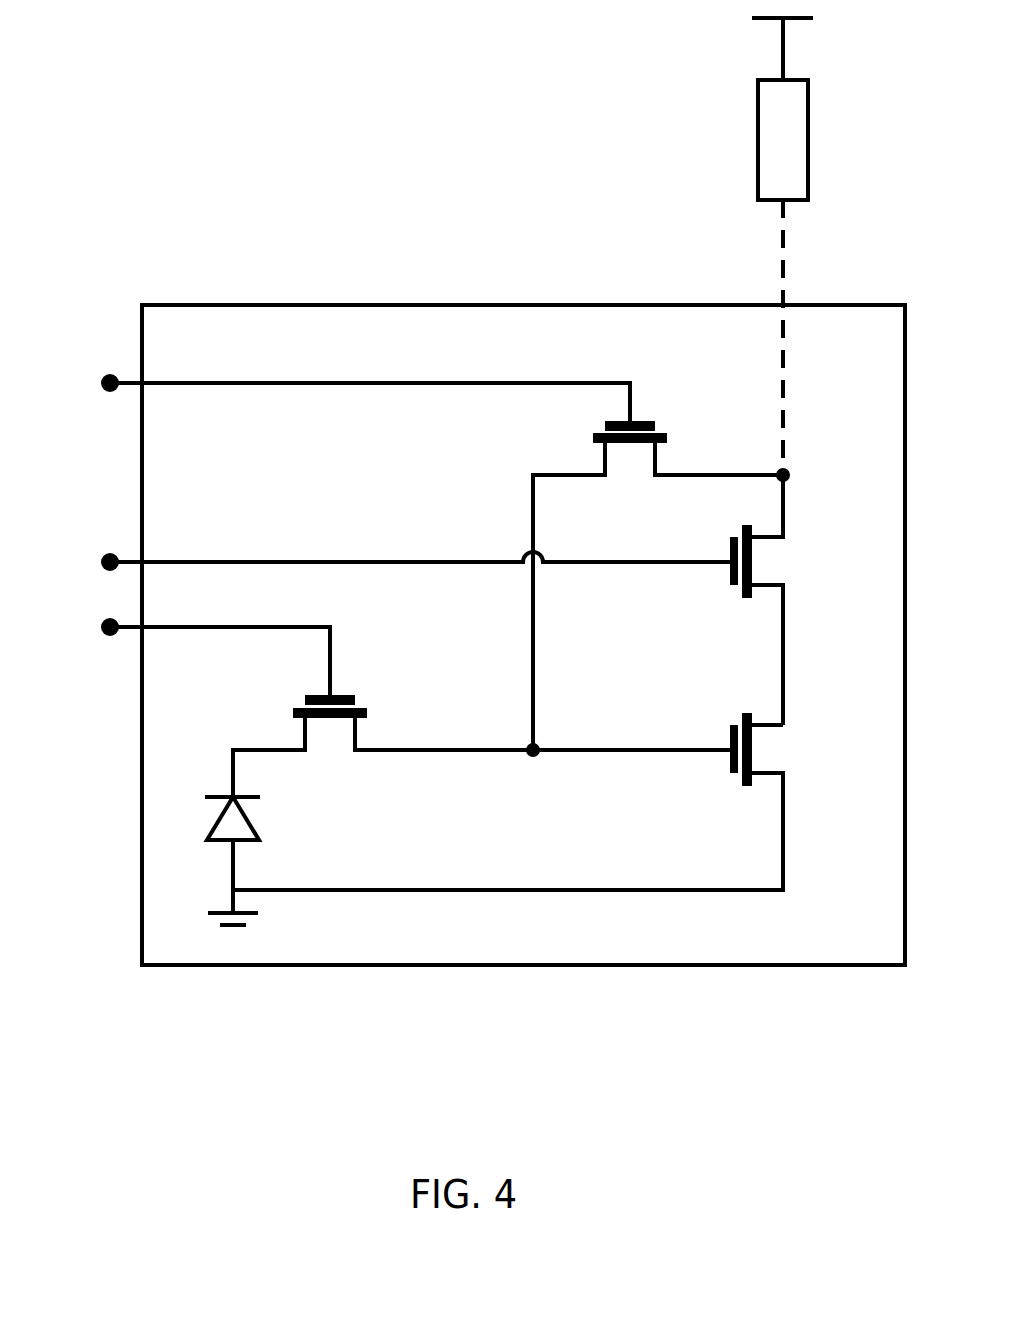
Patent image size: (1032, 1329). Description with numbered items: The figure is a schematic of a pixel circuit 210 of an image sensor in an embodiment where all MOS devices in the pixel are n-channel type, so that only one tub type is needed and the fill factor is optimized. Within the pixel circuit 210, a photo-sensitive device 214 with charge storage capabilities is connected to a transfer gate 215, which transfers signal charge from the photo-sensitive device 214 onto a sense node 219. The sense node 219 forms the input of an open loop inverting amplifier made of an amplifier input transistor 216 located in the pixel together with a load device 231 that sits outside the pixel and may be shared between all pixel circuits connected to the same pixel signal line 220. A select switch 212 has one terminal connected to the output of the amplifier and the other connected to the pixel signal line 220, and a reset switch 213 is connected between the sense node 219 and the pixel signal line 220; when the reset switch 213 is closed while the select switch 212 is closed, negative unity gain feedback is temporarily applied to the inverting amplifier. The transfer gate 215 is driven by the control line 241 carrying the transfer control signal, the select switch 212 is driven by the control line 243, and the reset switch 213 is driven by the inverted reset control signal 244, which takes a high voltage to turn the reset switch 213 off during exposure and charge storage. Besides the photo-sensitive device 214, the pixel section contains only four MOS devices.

The load device 231 is at (743, 109).
The pixel signal line 220 is at (750, 341).
The pixel circuit 210 is at (523, 635).
The inverted reset control signal 244 is at (324, 392).
The control line 243 is at (374, 562).
The control line 241 is at (174, 651).
The reset switch 213 is at (658, 585).
The select switch 212 is at (792, 600).
The amplifier input transistor 216 is at (543, 801).
The transfer gate 215 is at (383, 746).
The photo-sensitive device 214 is at (267, 861).
The sense node 219 is at (532, 778).